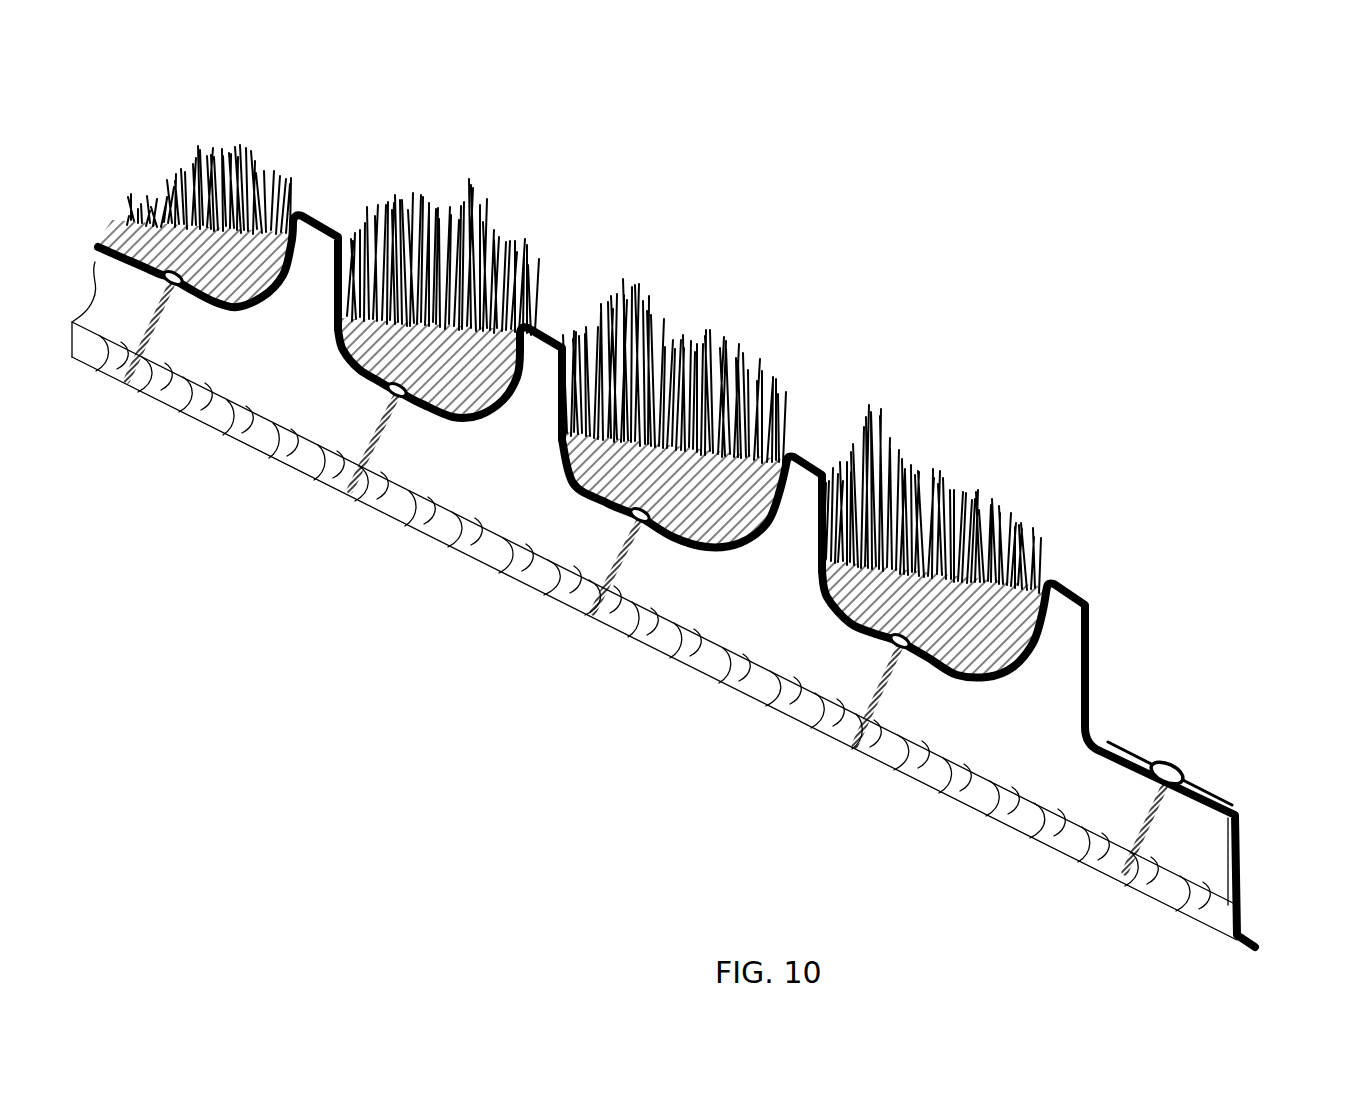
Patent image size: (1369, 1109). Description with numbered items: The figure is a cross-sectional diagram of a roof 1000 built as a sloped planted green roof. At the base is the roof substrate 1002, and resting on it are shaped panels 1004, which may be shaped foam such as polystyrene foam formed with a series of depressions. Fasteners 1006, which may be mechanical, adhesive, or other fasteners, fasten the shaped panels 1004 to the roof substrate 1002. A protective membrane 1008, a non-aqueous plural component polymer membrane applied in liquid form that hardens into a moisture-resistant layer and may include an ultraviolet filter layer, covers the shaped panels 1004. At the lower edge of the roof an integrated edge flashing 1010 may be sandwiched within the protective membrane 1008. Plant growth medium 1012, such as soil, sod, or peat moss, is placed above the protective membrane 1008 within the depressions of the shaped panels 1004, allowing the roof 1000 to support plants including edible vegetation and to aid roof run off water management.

The roof 1000 is at (338, 197).
The roof substrate 1002 is at (273, 432).
The shaped panels 1004 is at (767, 593).
The fasteners 1006 is at (617, 560).
The protective membrane 1008 is at (860, 637).
The integrated edge flashing 1010 is at (1252, 933).
The plant growth medium 1012 is at (987, 627).